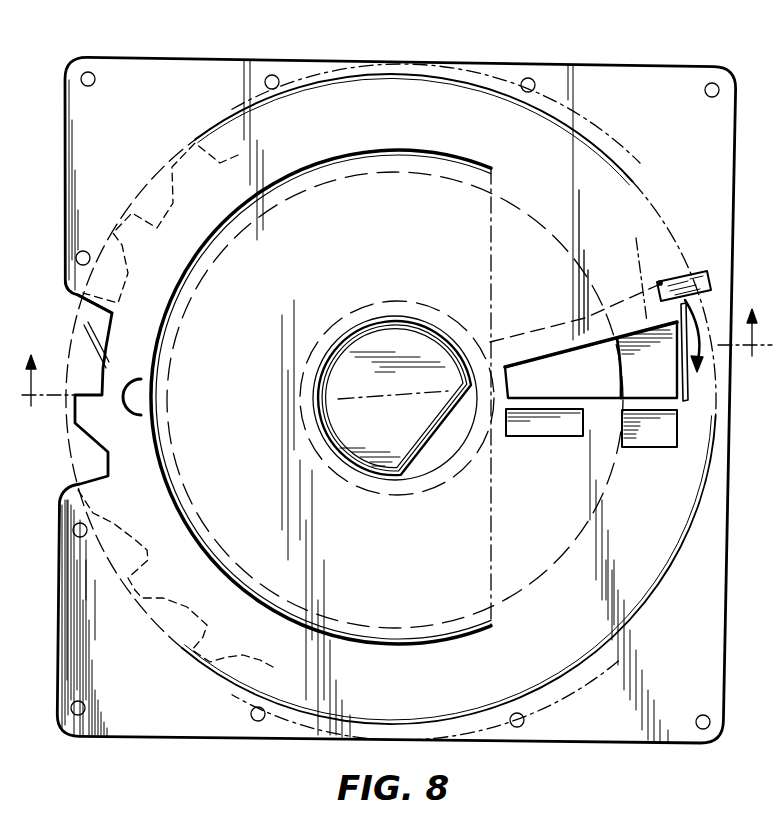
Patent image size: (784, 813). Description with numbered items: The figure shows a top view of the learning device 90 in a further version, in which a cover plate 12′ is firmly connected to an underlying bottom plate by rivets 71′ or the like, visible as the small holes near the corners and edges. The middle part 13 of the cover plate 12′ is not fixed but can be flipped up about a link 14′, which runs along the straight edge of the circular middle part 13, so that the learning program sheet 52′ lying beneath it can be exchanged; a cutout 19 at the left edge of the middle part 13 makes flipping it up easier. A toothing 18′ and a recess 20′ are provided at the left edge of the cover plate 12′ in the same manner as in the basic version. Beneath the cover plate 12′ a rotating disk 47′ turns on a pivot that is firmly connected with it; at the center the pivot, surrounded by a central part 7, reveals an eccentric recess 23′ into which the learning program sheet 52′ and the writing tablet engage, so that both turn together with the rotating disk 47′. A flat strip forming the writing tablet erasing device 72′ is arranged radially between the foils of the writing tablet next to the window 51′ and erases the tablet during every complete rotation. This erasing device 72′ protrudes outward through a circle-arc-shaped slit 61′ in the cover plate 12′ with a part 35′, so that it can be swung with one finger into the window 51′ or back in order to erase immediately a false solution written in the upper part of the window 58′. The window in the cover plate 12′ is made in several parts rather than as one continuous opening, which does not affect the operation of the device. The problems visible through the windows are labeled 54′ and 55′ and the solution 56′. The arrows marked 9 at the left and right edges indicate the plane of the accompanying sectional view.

The cover plate 12′ is at (220, 718).
The rivets 71′ is at (95, 71).
The device 90 is at (138, 747).
The recess 20′ is at (78, 296).
The toothing 18′ is at (98, 338).
The section line 9- 9 is at (397, 345).
The rotating disk 47′ is at (655, 577).
The learning program sheet 52′ is at (605, 480).
The middle part 13 is at (234, 361).
The link 14′ is at (498, 236).
The cutout 19 is at (145, 368).
The hub 7 is at (359, 483).
The eccentric recess 23′ is at (433, 455).
The problem 54′ is at (513, 372).
The window 51′ is at (549, 354).
The solution 56′ is at (591, 350).
The writing tablet erasing device 72′ is at (643, 322).
The part of the writing tablet erasing device 35′ is at (685, 285).
The circle-arc-shaped slit 61′ is at (690, 392).
The problem 55′ is at (523, 421).
The window 58′ is at (641, 431).